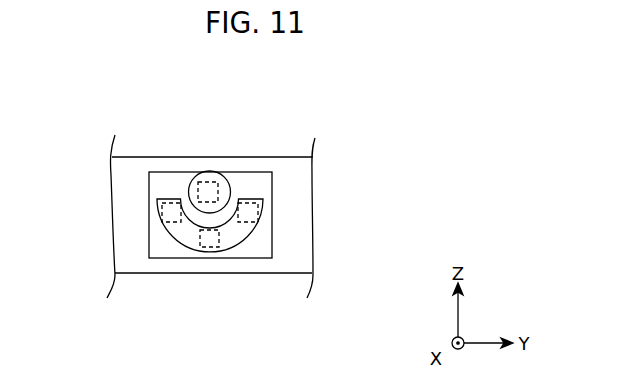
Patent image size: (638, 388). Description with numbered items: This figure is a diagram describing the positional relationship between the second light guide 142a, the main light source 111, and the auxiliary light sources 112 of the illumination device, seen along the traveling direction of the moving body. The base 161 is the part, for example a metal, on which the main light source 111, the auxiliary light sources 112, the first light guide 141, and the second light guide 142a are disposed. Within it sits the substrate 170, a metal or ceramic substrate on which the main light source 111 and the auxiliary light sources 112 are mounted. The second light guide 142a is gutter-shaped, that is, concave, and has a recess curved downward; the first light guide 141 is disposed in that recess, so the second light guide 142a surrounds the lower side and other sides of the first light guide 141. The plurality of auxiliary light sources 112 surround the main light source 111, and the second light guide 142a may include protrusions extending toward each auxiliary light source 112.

The main light source 111 is at (210, 171).
The auxiliary light sources 112 is at (235, 226).
The first light guide 141 is at (191, 185).
The second light guide 142a is at (263, 199).
The base 161 is at (277, 173).
The substrate 170 is at (149, 171).